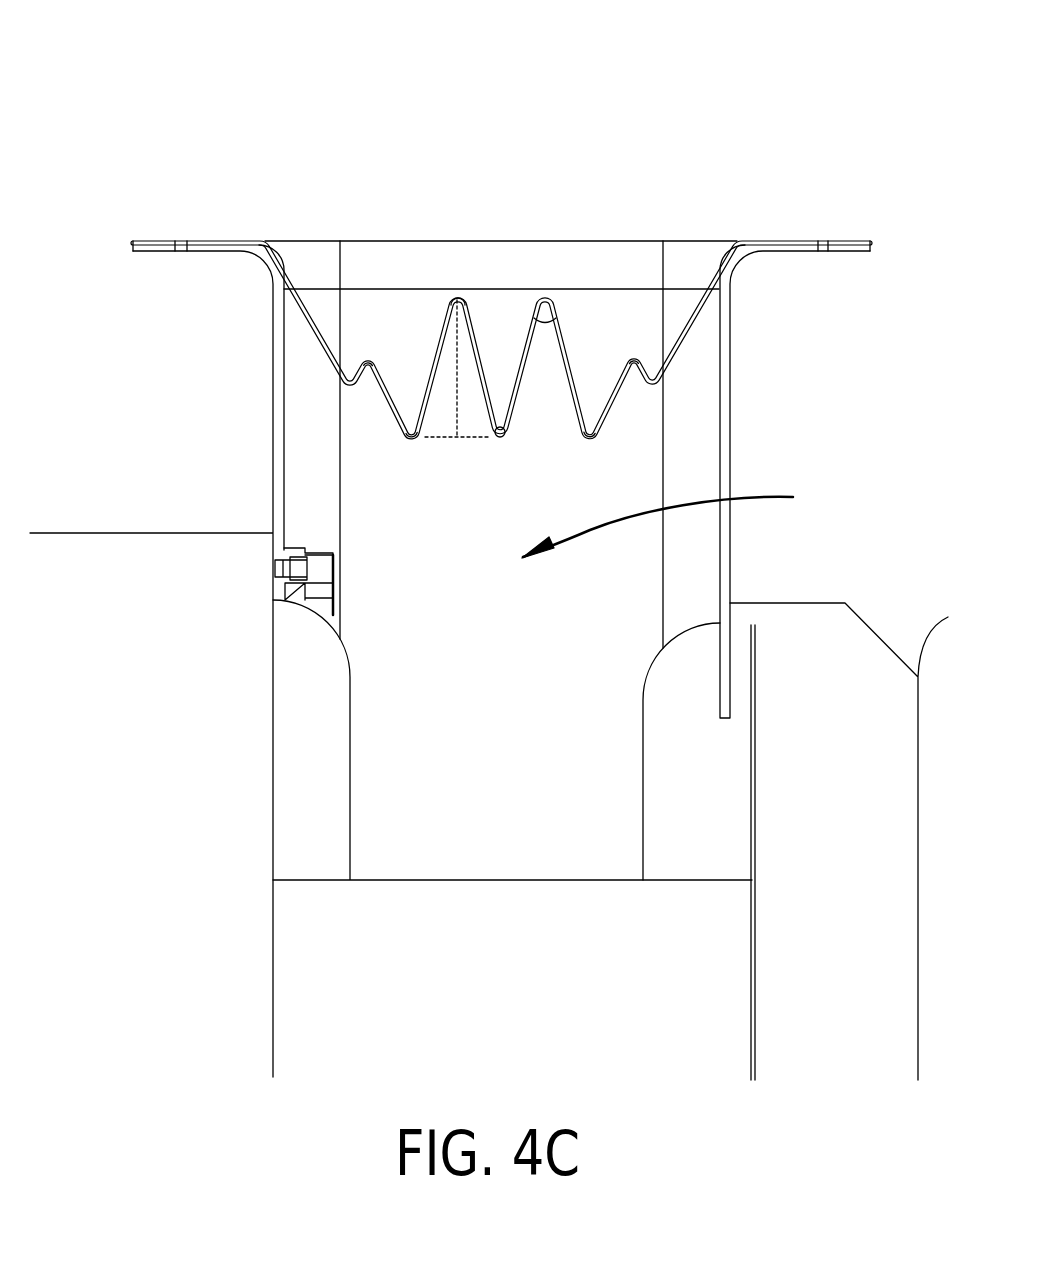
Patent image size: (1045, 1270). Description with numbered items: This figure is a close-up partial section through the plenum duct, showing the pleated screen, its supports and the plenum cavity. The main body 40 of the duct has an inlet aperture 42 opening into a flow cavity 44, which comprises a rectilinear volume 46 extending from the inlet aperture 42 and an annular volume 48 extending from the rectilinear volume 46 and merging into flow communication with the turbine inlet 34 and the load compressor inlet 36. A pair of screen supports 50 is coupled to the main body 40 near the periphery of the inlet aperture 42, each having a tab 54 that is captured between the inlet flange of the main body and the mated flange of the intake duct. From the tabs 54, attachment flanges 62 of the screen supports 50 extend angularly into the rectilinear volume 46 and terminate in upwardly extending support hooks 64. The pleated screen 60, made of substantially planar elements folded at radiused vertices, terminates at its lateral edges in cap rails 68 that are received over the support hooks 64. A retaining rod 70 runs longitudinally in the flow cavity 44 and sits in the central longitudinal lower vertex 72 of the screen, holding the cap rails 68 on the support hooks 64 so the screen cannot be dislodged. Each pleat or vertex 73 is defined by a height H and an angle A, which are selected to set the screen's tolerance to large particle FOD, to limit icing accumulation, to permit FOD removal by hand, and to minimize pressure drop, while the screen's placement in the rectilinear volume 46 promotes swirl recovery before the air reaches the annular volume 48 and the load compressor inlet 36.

The inlet of the gas turbine engine 34 is at (683, 842).
The inlet of the load compressor 36 is at (305, 828).
The main body 40 is at (273, 482).
The inlet aperture 42 is at (512, 260).
The flow cavity 44 is at (673, 521).
The rectilinear volume 46 is at (523, 483).
The annular volume 48 is at (488, 657).
The screen supports 50 is at (317, 333).
The tab 54 is at (204, 240).
The pleated screen 60 is at (458, 297).
The attachment flanges 62 is at (300, 303).
The support hooks 64 is at (373, 385).
The cap rails 68 is at (366, 353).
The retaining rod 70 is at (500, 440).
The central longitudinal lower vertex 72 is at (500, 440).
The pleat or vertex 73 is at (545, 298).
The angle A is at (540, 328).
The height H is at (457, 373).